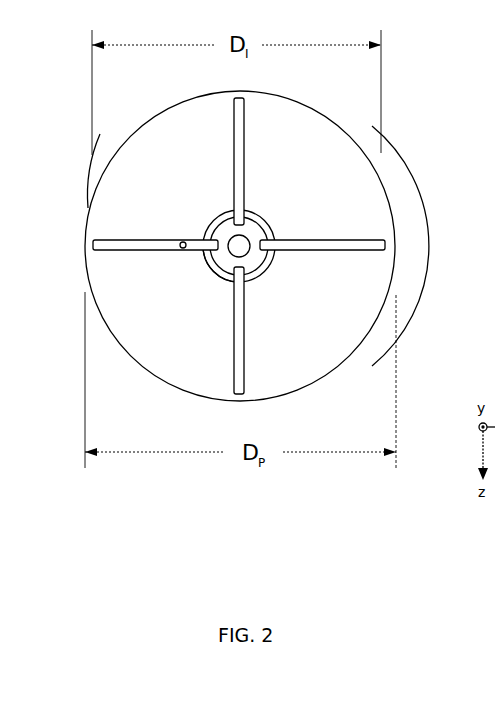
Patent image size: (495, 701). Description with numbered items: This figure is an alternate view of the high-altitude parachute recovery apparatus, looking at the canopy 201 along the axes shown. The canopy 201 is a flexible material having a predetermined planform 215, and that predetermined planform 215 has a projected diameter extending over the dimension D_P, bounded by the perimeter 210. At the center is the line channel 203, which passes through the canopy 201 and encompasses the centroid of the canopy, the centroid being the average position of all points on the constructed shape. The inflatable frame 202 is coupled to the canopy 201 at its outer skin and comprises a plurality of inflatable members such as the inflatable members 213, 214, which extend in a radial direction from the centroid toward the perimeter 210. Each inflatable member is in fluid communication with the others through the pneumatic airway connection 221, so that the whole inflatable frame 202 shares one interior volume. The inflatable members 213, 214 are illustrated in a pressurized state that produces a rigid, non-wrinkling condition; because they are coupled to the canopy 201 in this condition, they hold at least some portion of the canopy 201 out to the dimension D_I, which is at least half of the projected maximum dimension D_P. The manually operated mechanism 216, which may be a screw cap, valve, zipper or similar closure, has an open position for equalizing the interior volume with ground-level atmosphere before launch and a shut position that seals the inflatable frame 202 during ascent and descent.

The canopy 201 is at (178, 133).
The inflatable frame 202 is at (290, 221).
The line channel 203 is at (245, 239).
The perimeter 210 is at (392, 199).
The inflatable member 213 is at (344, 251).
The inflatable member 214 is at (141, 251).
The predetermined planform 215 is at (72, 178).
The manually operated mechanism 216 is at (182, 249).
The pneumatic airway connection 221 is at (213, 279).